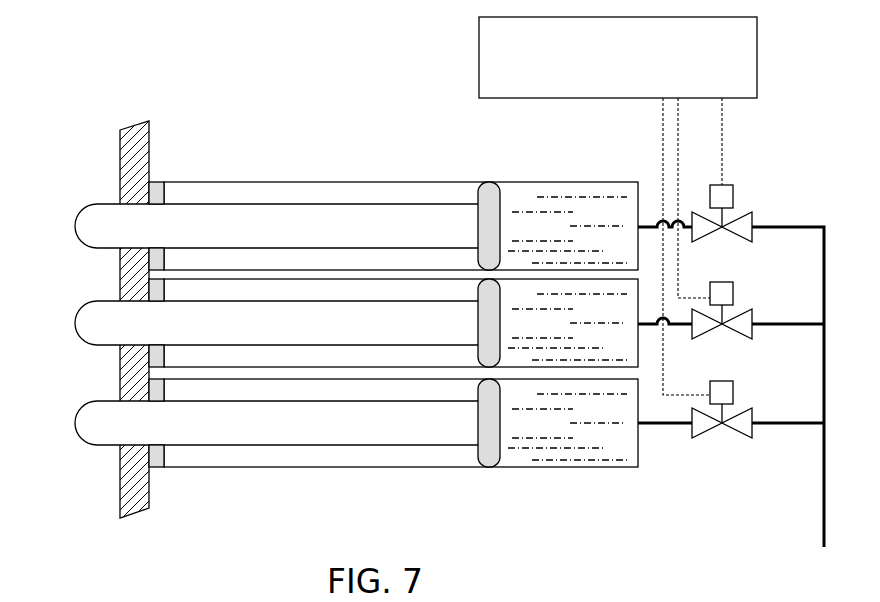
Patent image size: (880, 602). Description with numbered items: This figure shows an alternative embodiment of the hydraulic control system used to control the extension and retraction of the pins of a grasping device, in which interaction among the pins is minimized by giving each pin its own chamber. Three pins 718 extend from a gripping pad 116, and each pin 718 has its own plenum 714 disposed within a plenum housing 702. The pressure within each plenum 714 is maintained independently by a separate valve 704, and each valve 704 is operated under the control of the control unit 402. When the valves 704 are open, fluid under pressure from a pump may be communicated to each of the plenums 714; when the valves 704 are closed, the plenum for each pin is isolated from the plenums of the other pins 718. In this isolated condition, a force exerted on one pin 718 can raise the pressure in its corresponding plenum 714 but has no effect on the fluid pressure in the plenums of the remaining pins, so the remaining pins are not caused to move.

The gripping pad 116 is at (149, 151).
The plenum housing 702 is at (365, 182).
The pin 718 is at (276, 324).
The plenum 714 is at (523, 200).
The control unit 402 is at (618, 57).
The valve 704 is at (712, 231).